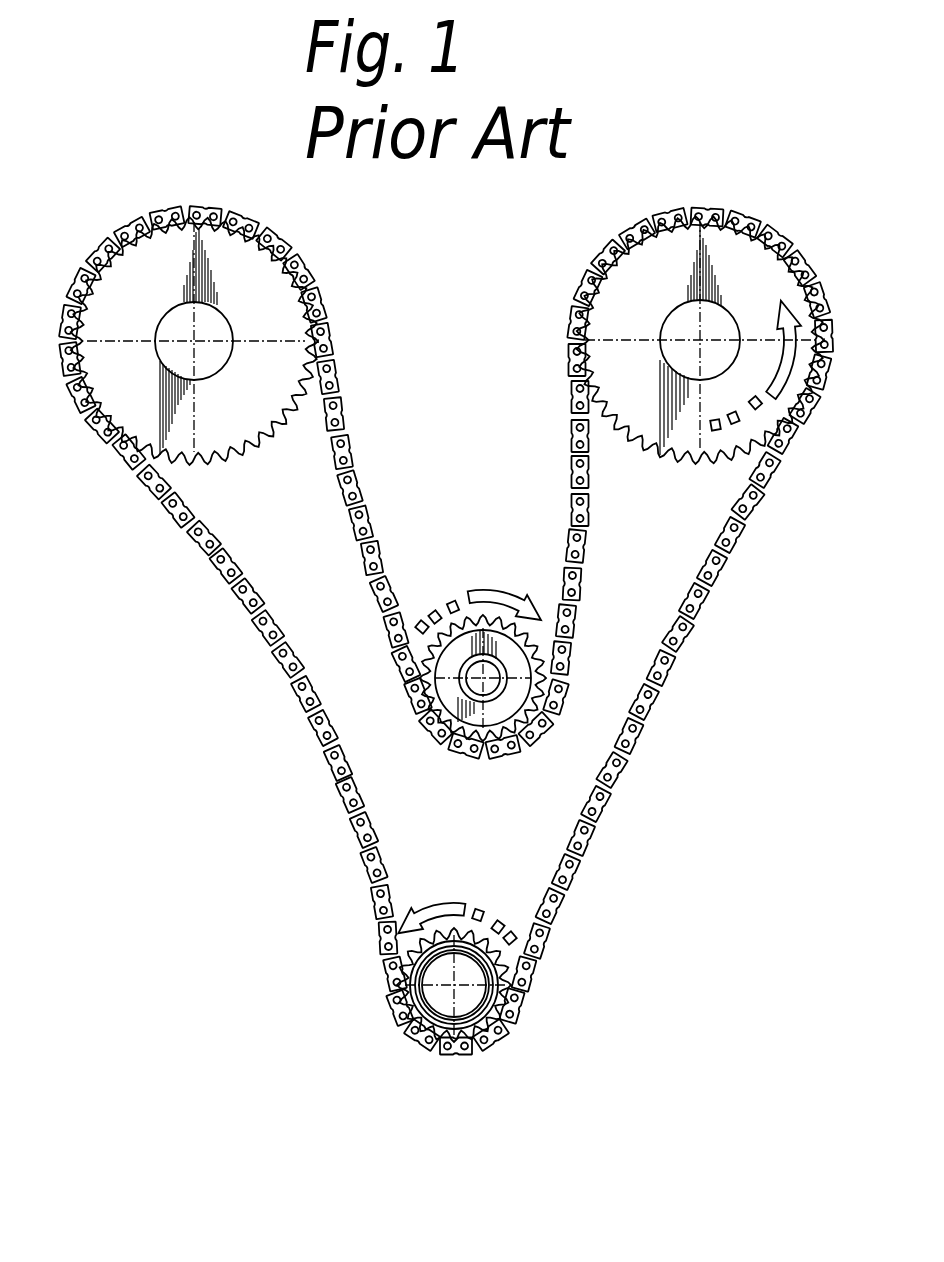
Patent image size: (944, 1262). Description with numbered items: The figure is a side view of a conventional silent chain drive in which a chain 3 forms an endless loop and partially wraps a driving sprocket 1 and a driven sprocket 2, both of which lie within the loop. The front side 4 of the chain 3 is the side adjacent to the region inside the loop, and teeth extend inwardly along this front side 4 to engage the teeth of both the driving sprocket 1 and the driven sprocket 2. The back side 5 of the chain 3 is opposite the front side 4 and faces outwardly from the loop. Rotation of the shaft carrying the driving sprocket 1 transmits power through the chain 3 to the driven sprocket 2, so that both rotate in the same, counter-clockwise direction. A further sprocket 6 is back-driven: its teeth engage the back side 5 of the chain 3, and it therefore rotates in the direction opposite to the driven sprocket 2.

The driving sprocket 1 is at (481, 930).
The driven sprocket 2 is at (648, 440).
The chain 3 is at (446, 630).
The front side 4 is at (703, 554).
The back side 5 is at (751, 541).
The back-driven sprocket 6 is at (516, 625).